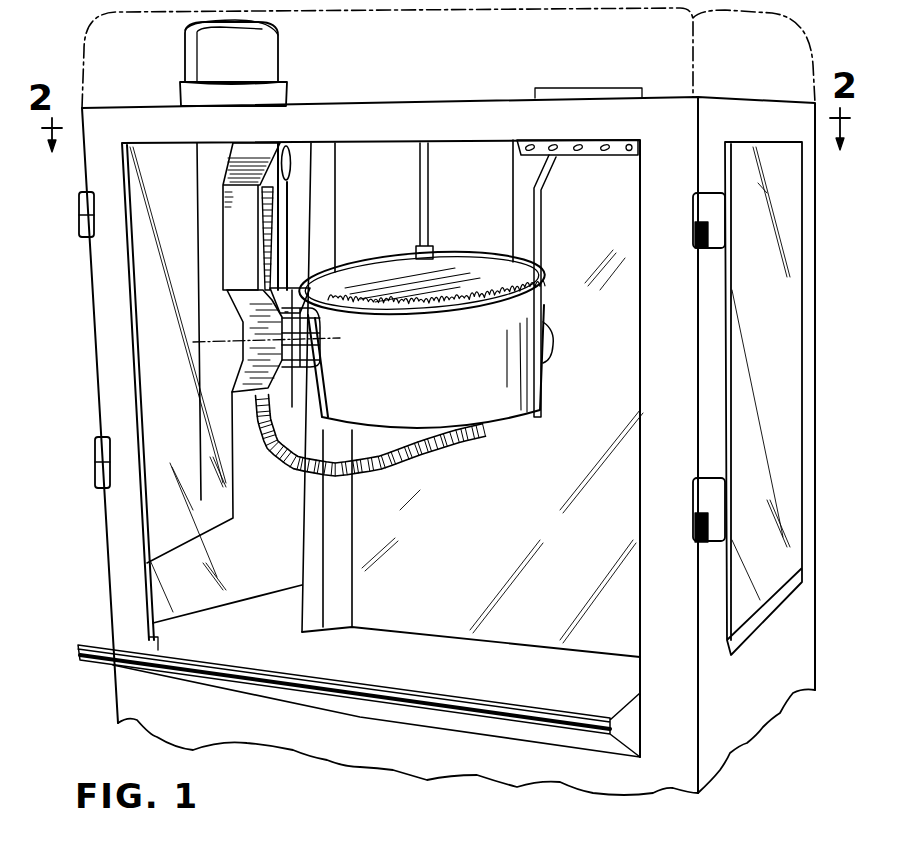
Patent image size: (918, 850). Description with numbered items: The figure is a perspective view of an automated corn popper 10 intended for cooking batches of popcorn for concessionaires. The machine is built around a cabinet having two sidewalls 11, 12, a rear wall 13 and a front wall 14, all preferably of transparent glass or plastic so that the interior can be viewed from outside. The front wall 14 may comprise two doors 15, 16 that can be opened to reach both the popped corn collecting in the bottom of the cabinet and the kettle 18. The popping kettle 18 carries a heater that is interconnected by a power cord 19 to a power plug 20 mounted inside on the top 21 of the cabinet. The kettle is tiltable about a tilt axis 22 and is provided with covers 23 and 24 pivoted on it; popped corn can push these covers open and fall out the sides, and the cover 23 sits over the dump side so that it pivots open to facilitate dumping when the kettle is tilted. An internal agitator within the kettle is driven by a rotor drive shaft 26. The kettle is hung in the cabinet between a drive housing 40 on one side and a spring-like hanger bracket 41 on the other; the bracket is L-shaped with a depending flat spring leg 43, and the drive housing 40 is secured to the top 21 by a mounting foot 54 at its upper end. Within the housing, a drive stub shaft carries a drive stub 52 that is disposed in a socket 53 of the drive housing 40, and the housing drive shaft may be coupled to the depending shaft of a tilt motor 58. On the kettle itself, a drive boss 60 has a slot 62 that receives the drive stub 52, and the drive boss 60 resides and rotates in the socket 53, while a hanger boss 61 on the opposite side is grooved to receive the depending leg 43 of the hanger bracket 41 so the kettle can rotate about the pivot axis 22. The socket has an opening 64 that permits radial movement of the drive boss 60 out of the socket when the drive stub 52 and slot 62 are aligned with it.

The automated corn popper 10 is at (785, 725).
The sidewall 11 is at (778, 685).
The sidewall 12 is at (244, 633).
The rear wall 13 is at (483, 568).
The front wall 14 is at (392, 758).
The door 15 is at (233, 520).
The door 16 is at (803, 545).
The kettle 18 is at (461, 334).
The power cord 19 is at (360, 465).
The power plug 20 is at (288, 168).
The top 21 is at (459, 99).
The tilt axis 22 is at (193, 342).
The cover 23 is at (474, 260).
The cover 24 is at (344, 262).
The rotor drive shaft 26 is at (428, 180).
The drive housing 40 is at (265, 265).
The hanger bracket 41 is at (540, 204).
The flat spring leg 43 is at (528, 222).
The drive stub 52 is at (280, 328).
The socket 53 is at (318, 368).
The mounting foot 54 is at (213, 151).
The tilt motor 58 is at (270, 58).
The drive boss 60 is at (285, 318).
The hanger boss 61 is at (543, 318).
The slot 62 is at (298, 278).
The opening 64 is at (270, 280).